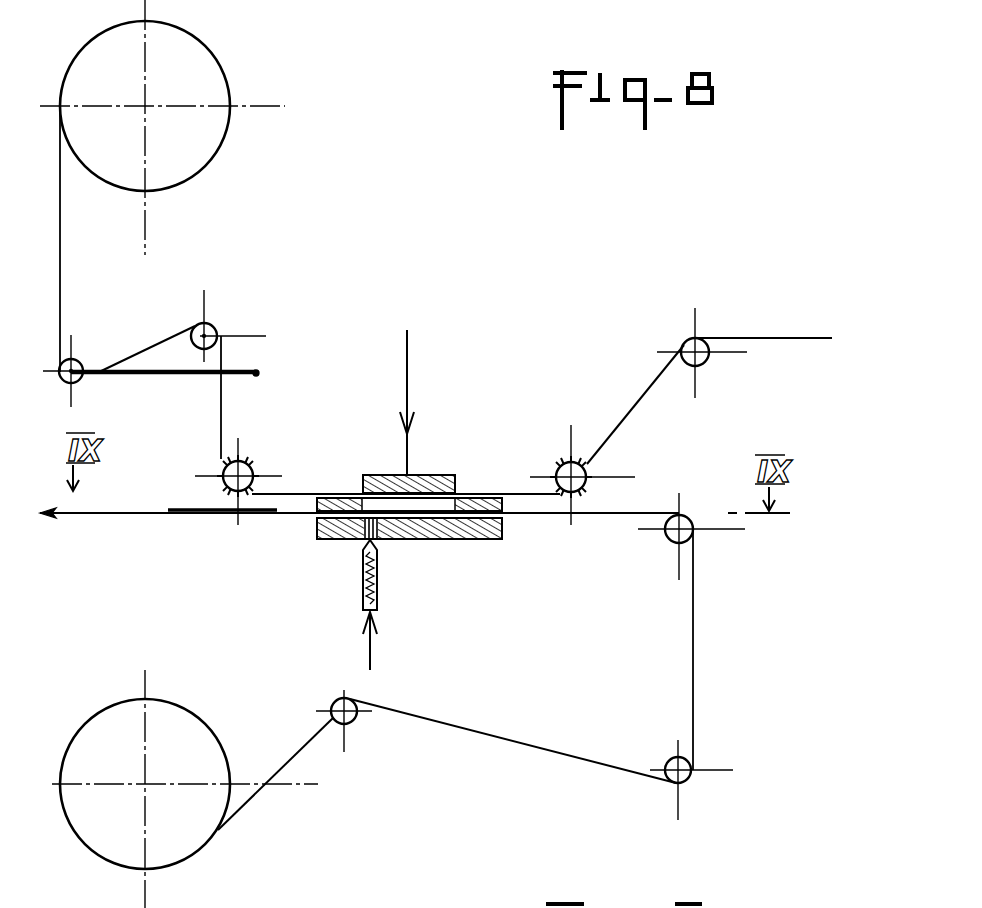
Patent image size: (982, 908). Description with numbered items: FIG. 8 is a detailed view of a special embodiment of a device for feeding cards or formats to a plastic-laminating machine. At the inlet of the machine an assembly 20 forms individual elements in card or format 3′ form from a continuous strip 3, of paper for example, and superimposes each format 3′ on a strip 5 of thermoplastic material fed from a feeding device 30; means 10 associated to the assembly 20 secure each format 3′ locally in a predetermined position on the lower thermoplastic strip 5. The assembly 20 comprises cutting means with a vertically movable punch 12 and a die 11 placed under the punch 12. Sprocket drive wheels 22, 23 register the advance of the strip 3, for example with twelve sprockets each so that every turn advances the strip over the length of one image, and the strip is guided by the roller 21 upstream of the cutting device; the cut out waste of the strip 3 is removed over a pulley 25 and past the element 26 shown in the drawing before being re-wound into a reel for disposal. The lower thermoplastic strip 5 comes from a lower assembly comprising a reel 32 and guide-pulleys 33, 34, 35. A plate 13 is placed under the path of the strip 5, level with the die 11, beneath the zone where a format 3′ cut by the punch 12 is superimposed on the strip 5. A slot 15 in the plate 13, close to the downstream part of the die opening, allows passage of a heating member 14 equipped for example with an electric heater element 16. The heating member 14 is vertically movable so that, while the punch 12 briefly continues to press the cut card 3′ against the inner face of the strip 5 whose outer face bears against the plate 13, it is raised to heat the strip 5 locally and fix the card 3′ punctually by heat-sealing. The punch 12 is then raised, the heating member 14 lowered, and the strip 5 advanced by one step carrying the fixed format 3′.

The continuous strip 3 is at (743, 337).
The format 3′ is at (182, 509).
The thermoplastic strip 5 is at (528, 742).
The means for securing formats 10 is at (403, 500).
The die 11 is at (502, 505).
The punch 12 is at (446, 475).
The plate 13 is at (476, 540).
The heating member 14 is at (378, 592).
The slot 15 is at (362, 540).
The electric heater element 16 is at (365, 585).
The assembly 20 is at (290, 324).
The roller 21 is at (688, 368).
The sprocket drive wheel 22 is at (556, 462).
The sprocket drive wheel 23 is at (256, 462).
The pulley 25 is at (83, 355).
The supply reel 26 is at (222, 62).
The feeding device 30 is at (300, 803).
The reel 32 is at (192, 708).
The guide-pulley 33 is at (332, 700).
The guide-pulley 34 is at (690, 782).
The guide-pulley 35 is at (670, 541).